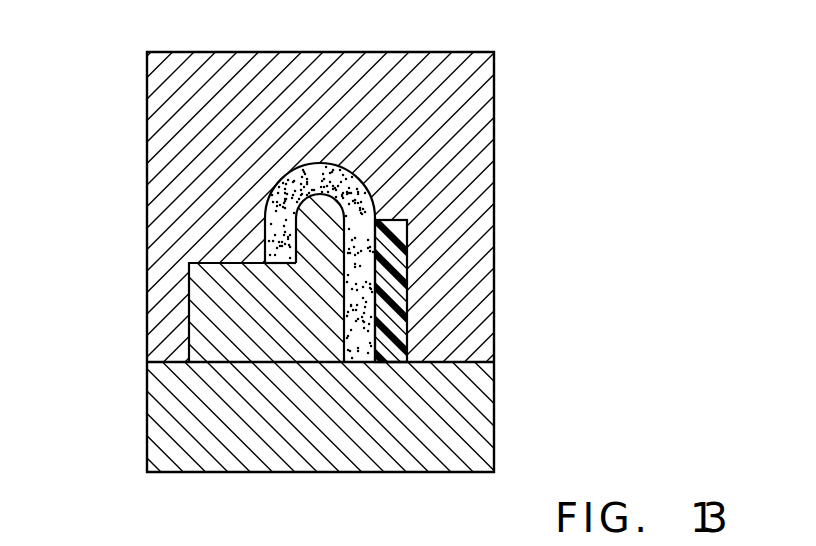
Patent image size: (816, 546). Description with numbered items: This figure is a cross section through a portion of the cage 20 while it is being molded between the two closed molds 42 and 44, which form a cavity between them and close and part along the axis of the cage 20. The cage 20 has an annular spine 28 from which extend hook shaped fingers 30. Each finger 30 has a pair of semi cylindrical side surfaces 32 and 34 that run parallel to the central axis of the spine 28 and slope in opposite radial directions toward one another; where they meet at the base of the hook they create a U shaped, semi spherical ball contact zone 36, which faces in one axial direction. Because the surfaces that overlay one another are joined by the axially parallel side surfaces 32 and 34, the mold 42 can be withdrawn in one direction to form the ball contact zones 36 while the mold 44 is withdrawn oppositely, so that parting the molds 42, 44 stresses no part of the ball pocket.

The mold 44 is at (159, 117).
The mold 42 is at (160, 397).
The side surface 32 is at (283, 240).
The ball contact zone 36 is at (343, 182).
The finger 30 is at (311, 166).
The side surface 34 is at (363, 240).
The cage 20 is at (407, 268).
The annular spine 28 is at (394, 327).